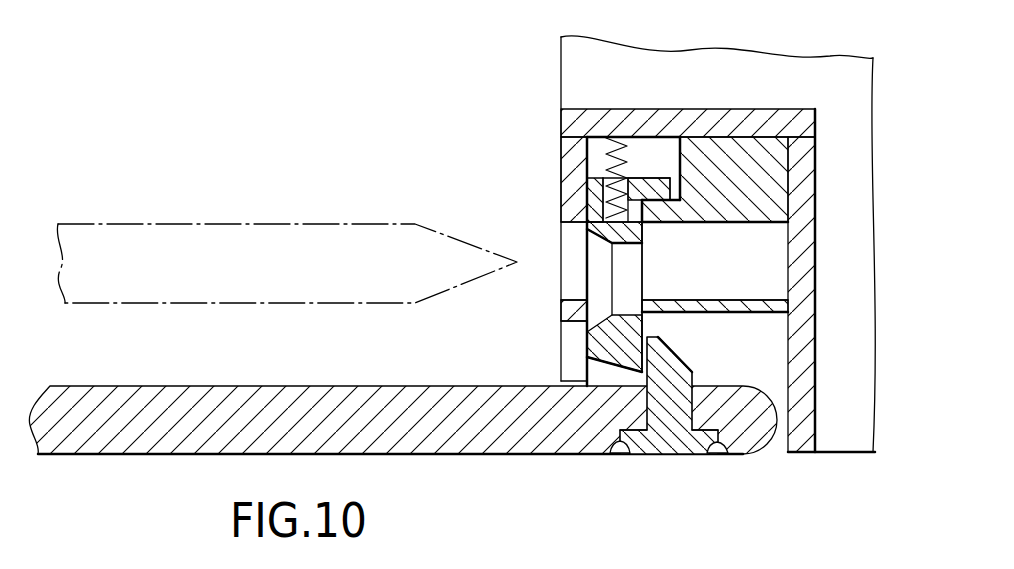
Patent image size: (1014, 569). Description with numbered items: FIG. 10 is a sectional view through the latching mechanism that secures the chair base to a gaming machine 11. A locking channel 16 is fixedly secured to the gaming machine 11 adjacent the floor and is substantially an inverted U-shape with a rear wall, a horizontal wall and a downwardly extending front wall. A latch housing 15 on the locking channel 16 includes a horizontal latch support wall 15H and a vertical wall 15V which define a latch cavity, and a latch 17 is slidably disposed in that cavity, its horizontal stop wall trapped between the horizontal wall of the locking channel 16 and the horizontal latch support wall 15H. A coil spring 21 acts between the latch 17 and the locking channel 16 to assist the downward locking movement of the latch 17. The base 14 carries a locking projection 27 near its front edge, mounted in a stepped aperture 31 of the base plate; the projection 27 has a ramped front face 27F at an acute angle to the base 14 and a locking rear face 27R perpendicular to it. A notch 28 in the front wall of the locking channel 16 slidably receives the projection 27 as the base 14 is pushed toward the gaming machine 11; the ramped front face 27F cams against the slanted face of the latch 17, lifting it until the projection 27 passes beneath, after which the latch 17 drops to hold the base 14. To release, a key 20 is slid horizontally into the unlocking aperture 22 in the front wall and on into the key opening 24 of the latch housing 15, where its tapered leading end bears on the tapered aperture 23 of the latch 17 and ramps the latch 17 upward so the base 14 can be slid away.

The gaming machine 11 is at (573, 72).
The base 14 is at (213, 450).
The latch housing 15 is at (777, 229).
The horizontal latch support wall 15H is at (667, 213).
The vertical wall 15V is at (797, 176).
The locking channel 16 is at (807, 453).
The latch 17 is at (630, 334).
The key 20 is at (295, 230).
The coil spring 21 is at (592, 143).
The unlocking aperture 22 is at (560, 235).
The tapered aperture 23 is at (598, 282).
The key opening 24 is at (777, 260).
The locking projection 27 is at (651, 423).
The ramped front face 27F is at (680, 362).
The locking rear face 27R is at (612, 452).
The notch 28 is at (567, 363).
The stepped aperture 31 is at (622, 454).